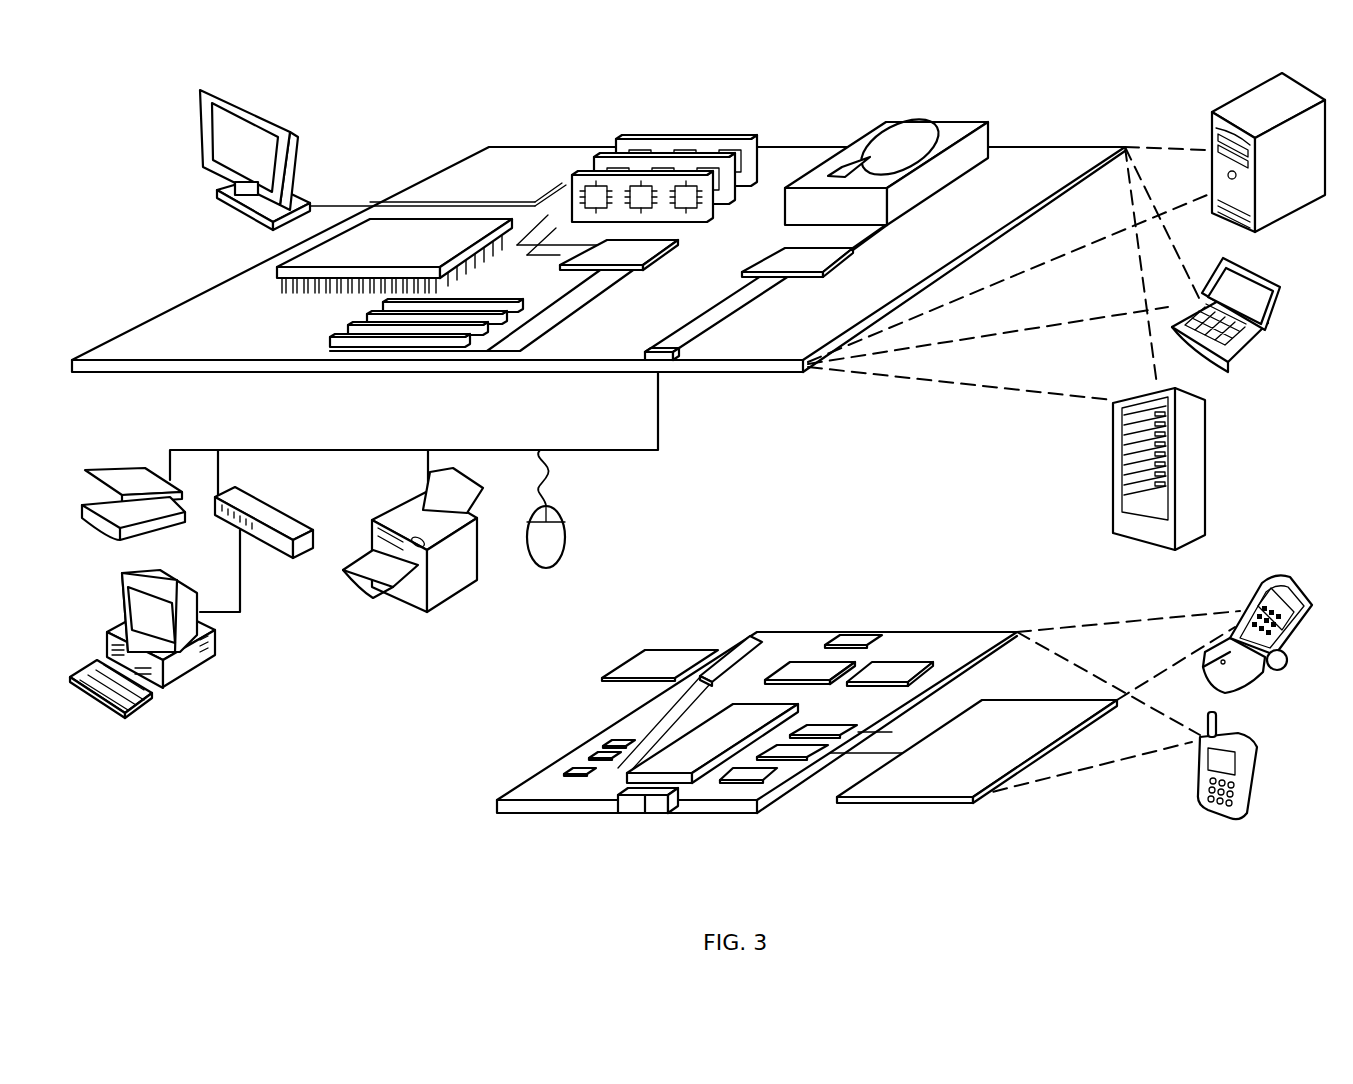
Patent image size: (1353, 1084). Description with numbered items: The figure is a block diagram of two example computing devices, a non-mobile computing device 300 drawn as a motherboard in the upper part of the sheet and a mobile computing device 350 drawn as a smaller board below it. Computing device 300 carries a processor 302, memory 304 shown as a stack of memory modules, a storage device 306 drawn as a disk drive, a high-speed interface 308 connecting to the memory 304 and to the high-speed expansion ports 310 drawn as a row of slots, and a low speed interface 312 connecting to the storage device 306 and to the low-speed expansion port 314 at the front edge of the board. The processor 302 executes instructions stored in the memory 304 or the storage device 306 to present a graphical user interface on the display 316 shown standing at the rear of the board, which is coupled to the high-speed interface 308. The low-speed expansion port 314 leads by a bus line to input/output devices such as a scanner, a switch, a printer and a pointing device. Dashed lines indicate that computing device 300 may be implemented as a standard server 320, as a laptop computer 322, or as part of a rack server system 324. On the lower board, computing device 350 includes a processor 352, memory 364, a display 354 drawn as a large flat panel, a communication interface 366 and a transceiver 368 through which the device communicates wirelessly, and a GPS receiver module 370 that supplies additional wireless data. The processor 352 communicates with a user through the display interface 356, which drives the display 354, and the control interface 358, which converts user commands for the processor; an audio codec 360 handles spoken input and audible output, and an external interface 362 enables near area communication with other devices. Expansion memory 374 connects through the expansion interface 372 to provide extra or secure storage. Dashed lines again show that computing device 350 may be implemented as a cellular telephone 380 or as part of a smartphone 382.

The computing device 300 is at (411, 117).
The processor 302 is at (277, 272).
The memory 304 is at (620, 142).
The storage device 306 is at (883, 123).
The high-speed interface 308 is at (597, 255).
The high-speed expansion ports 310 is at (357, 333).
The low speed interface 312 is at (785, 255).
The low-speed expansion port 314 is at (668, 364).
The display 316 is at (205, 92).
The standard server 320 is at (1212, 130).
The laptop computer 322 is at (1277, 290).
The rack server system 324 is at (1111, 480).
The computing device 350 is at (466, 816).
The processor 352 is at (683, 767).
The display 354 is at (933, 787).
The display interface 356 is at (753, 773).
The control interface 358 is at (787, 748).
The audio codec 360 is at (815, 730).
The external interface 362 is at (647, 815).
The memory 364 is at (600, 758).
The communication interface 366 is at (812, 668).
The transceiver 368 is at (893, 670).
The GPS receiver module 370 is at (867, 633).
The expansion interface 372 is at (738, 643).
The expansion memory 374 is at (662, 643).
The cellular telephone 380 is at (1258, 588).
The smartphone 382 is at (1200, 773).